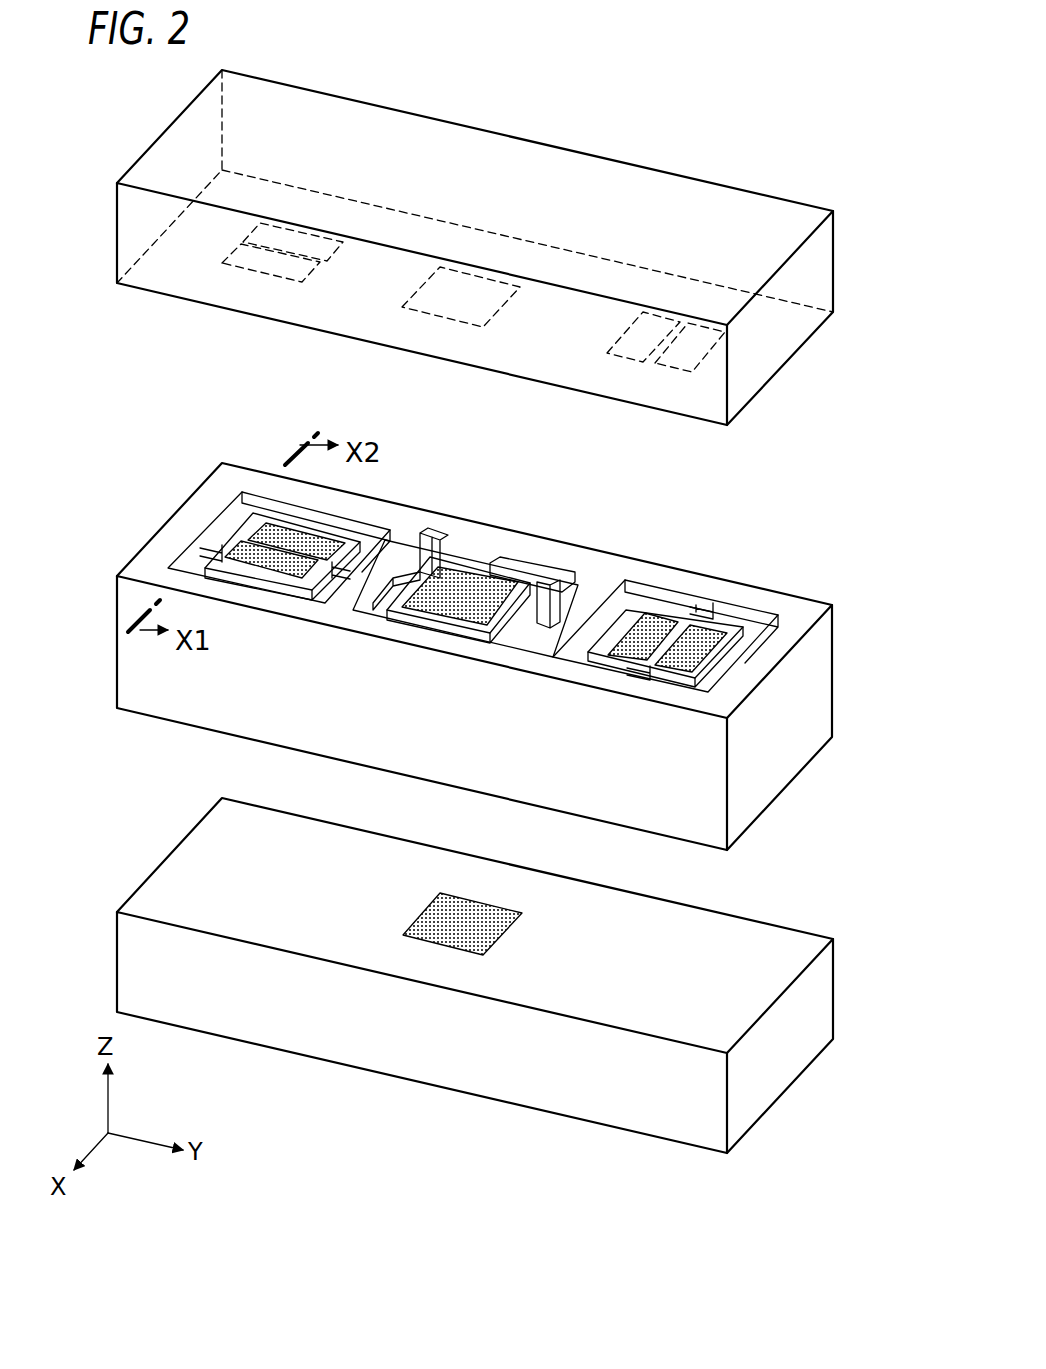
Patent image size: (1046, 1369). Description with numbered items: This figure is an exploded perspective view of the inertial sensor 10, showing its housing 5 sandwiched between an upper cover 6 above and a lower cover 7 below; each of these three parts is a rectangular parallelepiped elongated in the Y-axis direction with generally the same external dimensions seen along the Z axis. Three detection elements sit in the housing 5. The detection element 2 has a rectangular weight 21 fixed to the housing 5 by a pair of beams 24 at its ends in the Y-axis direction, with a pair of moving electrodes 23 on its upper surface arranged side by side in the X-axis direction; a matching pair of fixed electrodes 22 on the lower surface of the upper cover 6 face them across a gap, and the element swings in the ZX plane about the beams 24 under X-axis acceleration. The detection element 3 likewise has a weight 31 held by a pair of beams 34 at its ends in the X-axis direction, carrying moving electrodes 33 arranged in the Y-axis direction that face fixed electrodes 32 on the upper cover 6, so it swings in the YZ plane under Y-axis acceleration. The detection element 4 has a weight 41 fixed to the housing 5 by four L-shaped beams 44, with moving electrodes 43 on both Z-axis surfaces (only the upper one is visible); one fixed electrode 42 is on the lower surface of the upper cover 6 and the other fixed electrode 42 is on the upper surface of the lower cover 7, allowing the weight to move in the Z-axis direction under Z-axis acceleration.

The detection element 2 is at (150, 436).
The detection element 3 is at (764, 540).
The detection element 4 is at (553, 474).
The housing 5 is at (828, 633).
The upper cover 6 is at (757, 212).
The lower cover 7 is at (798, 948).
The inertial sensor 10 is at (153, 408).
The weight 21 is at (210, 560).
The fixed electrodes 22 is at (250, 268).
The moving electrodes 23 is at (290, 528).
The beams 24 is at (340, 566).
The weight 31 is at (672, 615).
The fixed electrodes 32 is at (633, 358).
The moving electrodes 33 is at (622, 650).
The beams 34 is at (638, 666).
The weight 41 is at (465, 567).
The fixed electrodes 42 is at (458, 312).
The moving electrodes 43 is at (465, 620).
The beams 44 is at (356, 608).